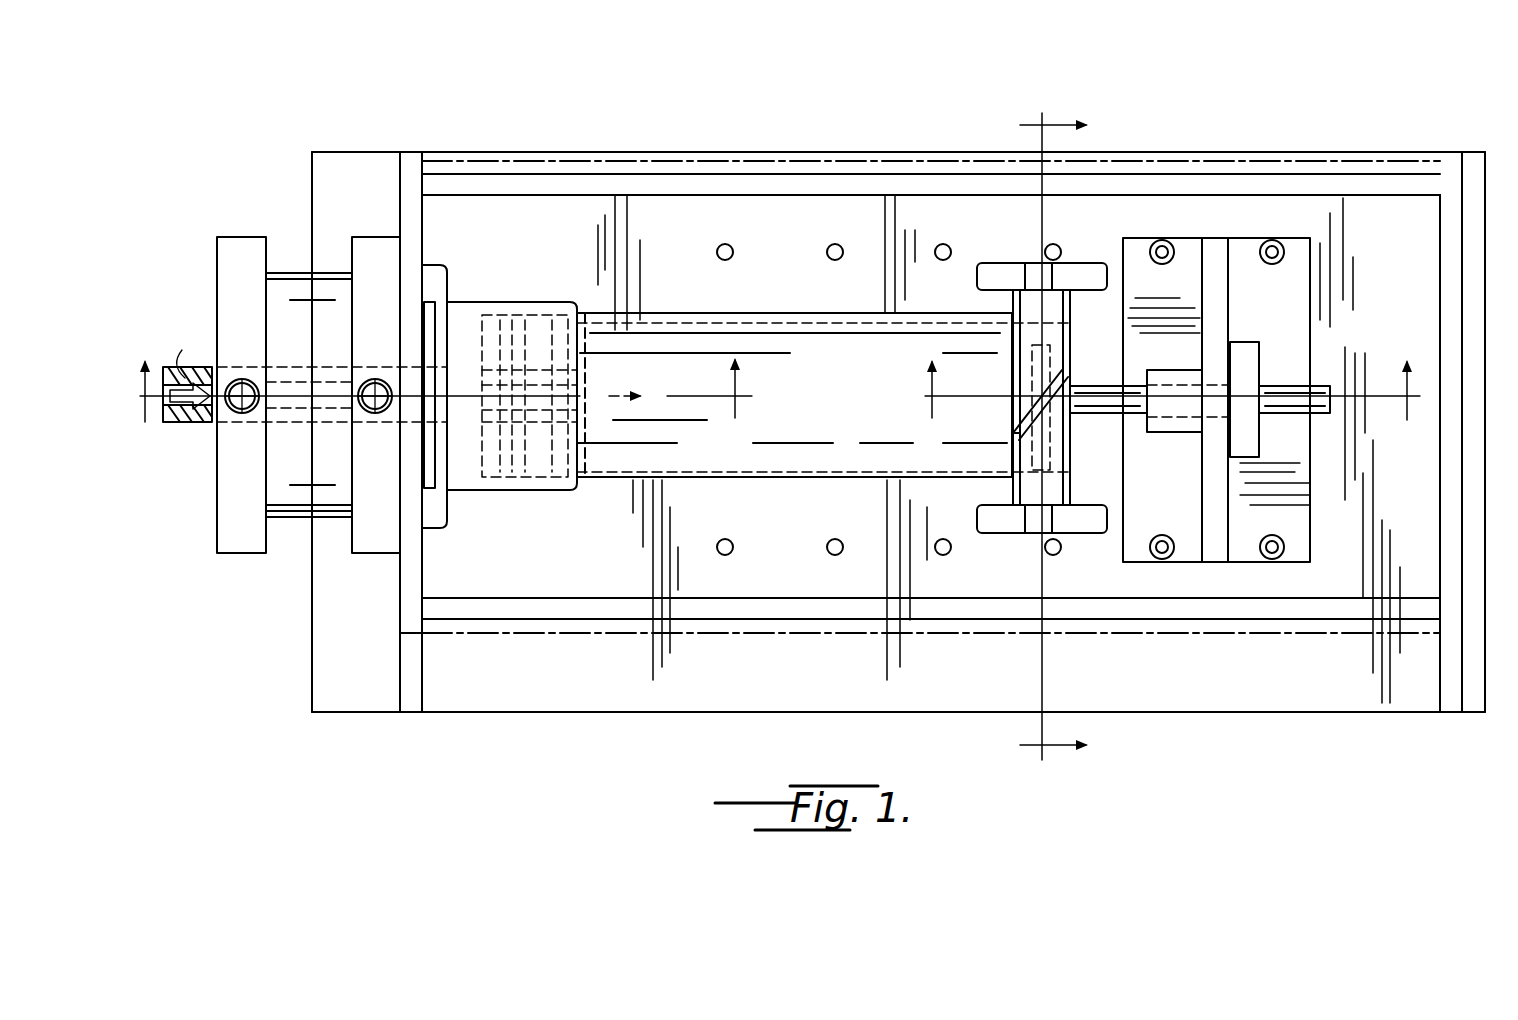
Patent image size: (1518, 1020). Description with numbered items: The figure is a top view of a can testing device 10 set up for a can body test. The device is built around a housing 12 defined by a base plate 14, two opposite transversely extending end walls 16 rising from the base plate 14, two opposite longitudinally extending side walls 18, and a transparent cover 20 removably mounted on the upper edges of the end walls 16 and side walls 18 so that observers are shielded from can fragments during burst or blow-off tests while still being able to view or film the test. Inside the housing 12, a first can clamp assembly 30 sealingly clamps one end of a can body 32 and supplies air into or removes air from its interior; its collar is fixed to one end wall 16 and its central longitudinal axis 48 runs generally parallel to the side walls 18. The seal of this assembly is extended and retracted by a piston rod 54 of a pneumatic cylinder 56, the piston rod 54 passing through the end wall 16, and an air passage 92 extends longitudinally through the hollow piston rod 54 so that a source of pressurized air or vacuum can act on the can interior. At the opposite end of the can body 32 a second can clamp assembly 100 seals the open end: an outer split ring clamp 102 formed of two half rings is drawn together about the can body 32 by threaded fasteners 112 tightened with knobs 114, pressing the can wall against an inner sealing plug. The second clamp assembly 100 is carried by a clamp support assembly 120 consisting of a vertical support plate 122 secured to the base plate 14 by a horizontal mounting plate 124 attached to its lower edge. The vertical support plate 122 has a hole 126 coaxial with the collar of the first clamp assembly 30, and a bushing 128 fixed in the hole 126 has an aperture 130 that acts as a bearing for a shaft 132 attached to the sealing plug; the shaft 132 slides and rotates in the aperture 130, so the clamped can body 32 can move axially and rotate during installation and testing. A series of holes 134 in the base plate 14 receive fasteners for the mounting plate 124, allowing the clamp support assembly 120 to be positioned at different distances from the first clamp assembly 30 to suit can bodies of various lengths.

The can testing device 10 is at (583, 136).
The housing 12 is at (760, 152).
The base plate 14 is at (1478, 153).
The end walls 16 is at (400, 207).
The side walls 18 is at (1222, 186).
The transparent cover 20 is at (750, 636).
The first can clamp assembly 30 is at (540, 285).
The can body 32 is at (720, 330).
The central longitudinal axis 48 is at (290, 380).
The piston rod 54 is at (192, 428).
The pneumatic cylinder 56 is at (297, 520).
The air passage 92 is at (305, 405).
The second can clamp assembly 100 is at (1142, 578).
The outer split ring clamp 102 is at (1010, 302).
The threaded fasteners 112 is at (1053, 440).
The knobs 114 is at (1080, 268).
The clamp support assembly 120 is at (1240, 330).
The vertical support plate 122 is at (1217, 247).
The horizontal mounting plate 124 is at (1297, 553).
The hole 126 is at (1216, 370).
The bushing 128 is at (1262, 365).
The aperture 130 is at (1210, 445).
The shaft 132 is at (1097, 387).
The holes 134 is at (733, 256).